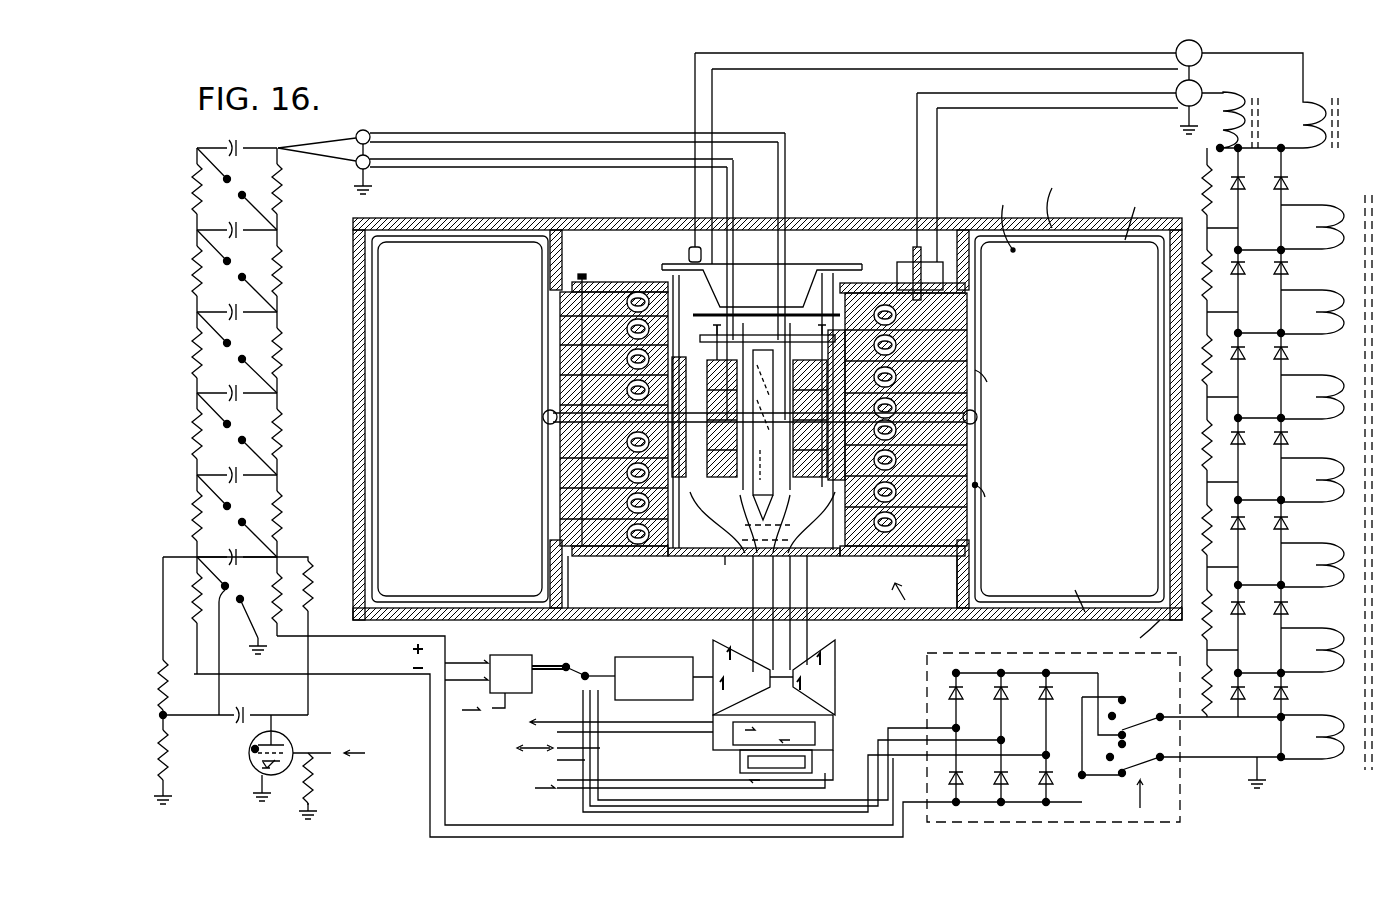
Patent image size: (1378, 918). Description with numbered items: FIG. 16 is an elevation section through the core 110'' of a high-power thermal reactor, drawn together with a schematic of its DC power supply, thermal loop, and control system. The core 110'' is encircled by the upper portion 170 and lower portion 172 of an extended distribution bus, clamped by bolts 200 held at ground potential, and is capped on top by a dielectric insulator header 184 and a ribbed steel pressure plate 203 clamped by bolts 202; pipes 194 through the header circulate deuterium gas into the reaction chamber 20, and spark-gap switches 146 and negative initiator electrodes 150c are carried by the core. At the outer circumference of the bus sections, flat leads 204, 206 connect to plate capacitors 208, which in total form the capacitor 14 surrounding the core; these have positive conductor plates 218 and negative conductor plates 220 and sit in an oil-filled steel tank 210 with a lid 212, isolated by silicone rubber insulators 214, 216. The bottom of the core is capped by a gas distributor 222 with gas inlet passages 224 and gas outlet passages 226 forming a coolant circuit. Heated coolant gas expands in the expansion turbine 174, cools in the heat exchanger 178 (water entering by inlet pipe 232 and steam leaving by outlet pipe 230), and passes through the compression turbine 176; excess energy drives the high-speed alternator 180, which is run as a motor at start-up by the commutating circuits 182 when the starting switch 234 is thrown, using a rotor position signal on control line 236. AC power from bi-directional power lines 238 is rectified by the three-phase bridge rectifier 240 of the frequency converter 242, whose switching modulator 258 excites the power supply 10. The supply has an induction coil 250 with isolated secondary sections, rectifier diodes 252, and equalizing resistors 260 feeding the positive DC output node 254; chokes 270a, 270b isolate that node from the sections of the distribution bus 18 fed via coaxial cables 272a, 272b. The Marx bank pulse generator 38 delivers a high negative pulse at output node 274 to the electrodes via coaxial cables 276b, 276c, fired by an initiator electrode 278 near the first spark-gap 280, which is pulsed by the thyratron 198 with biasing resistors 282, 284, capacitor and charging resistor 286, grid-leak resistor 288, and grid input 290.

The power source 10 is at (1334, 787).
The capacitor 14 is at (1096, 230).
The distribution bus 18 is at (906, 599).
The reaction chamber 20 is at (754, 524).
The pulse generator 38 is at (219, 772).
The core 110'' is at (726, 574).
The spark-gap switches 146 is at (776, 460).
The initiator electrodes 150c is at (783, 267).
The upper portion of extended distribution bus 170 is at (946, 334).
The lower portion of extended distribution bus 172 is at (955, 454).
The expansion turbine 174 is at (731, 670).
The compression turbine 176 is at (818, 647).
The heat exchanger 178 is at (739, 767).
The high-speed alternator 180 is at (638, 660).
The commutating circuits 182 is at (505, 671).
The dielectric insulator header 184 is at (823, 327).
The pipes 194 is at (755, 264).
The thyratron 198 is at (283, 741).
The bolts 200 is at (593, 271).
The bolts 202 is at (758, 411).
The ribbed steel pressure plate 203 is at (846, 262).
The flat lead 204 is at (998, 383).
The flat lead 206 is at (995, 502).
The plate capacitors 208 is at (1059, 196).
The steel tank 210 is at (1131, 636).
The lid 212 is at (1136, 213).
The silicone rubber insulator 214 is at (1078, 590).
The silicone rubber insulator 216 is at (1133, 242).
The positive conductor plates 218 is at (999, 216).
The negative conductor plates 220 is at (483, 258).
The gas distributor 222 is at (701, 556).
The gas inlet passages 224 is at (798, 560).
The gas outlet passages 226 is at (790, 592).
The outlet pipe 230 is at (617, 732).
The inlet pipe 232 is at (658, 770).
The starting switch 234 is at (575, 655).
The control line 236 is at (625, 658).
The bi-directional power lines 238 is at (548, 772).
The three-phase bridge rectifier 240 is at (931, 676).
The frequency converter 242 is at (1188, 808).
The induction coil 250 is at (1356, 186).
The rectifier diodes 252 is at (1284, 760).
The positive DC output node 254 is at (1208, 148).
The switching modulator 258 is at (1128, 795).
The equalizing resistors 260 is at (1198, 182).
The choke 270a is at (1325, 104).
The choke 270b is at (1252, 106).
The coaxial cable 272a is at (1061, 53).
The coaxial cable 272b is at (1054, 98).
The output node 274 is at (278, 148).
The coaxial cable 276b is at (383, 164).
The coaxial cable 276c is at (383, 132).
The initiator electrode 278 is at (222, 620).
The first spark-gap 280 is at (264, 588).
The biasing resistor 282 is at (166, 687).
The biasing resistor 284 is at (169, 739).
The pulse charge storage capacitor 286 is at (310, 616).
The thyratron grid-leak resistor 288 is at (314, 787).
The grid input 290 is at (338, 737).